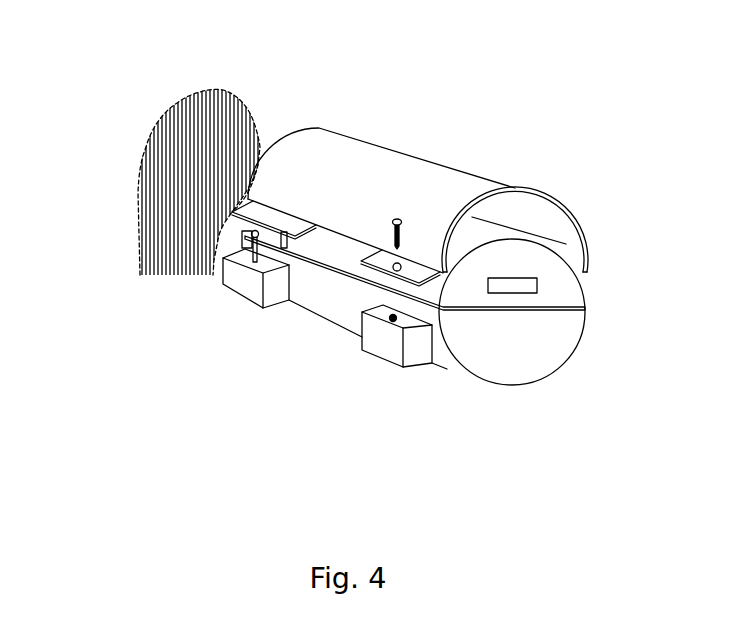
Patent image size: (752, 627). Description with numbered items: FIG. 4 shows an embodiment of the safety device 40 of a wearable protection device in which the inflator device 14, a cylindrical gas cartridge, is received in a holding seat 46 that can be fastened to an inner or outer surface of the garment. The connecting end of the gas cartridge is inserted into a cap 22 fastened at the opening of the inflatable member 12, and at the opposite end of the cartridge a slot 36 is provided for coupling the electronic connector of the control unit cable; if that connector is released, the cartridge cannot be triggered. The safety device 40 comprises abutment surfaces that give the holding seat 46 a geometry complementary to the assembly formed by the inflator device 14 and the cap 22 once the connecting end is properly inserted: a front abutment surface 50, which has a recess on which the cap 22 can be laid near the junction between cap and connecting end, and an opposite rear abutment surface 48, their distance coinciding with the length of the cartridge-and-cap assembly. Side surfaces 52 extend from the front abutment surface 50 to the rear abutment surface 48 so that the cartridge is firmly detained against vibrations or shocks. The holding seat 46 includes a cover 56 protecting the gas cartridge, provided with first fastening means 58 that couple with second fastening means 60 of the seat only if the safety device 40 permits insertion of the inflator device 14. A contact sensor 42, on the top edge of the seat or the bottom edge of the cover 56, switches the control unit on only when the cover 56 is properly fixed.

The inflatable member 12 is at (129, 112).
The inflator device 14 is at (579, 300).
The cap 22 is at (228, 224).
The slot 36 is at (538, 285).
The safety device 40 is at (346, 321).
The contact sensor 42 is at (253, 256).
The holding seat 46 is at (451, 369).
The rear abutment surface 48 is at (546, 323).
The front abutment surface 50 is at (243, 240).
The side surfaces 52 is at (346, 303).
The cover 56 is at (357, 175).
The first fastening means 58 is at (286, 215).
The second fastening means 60 is at (252, 277).